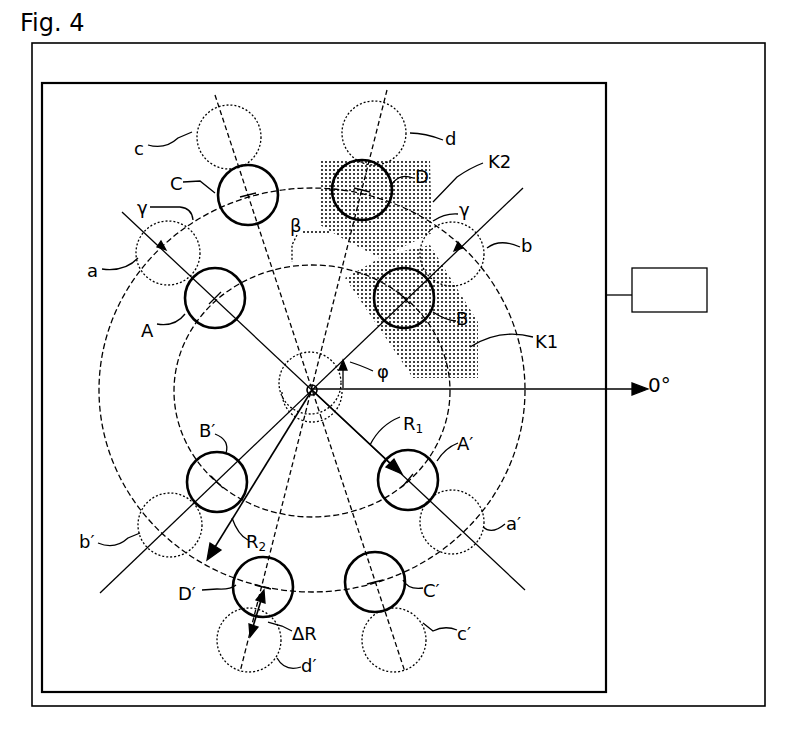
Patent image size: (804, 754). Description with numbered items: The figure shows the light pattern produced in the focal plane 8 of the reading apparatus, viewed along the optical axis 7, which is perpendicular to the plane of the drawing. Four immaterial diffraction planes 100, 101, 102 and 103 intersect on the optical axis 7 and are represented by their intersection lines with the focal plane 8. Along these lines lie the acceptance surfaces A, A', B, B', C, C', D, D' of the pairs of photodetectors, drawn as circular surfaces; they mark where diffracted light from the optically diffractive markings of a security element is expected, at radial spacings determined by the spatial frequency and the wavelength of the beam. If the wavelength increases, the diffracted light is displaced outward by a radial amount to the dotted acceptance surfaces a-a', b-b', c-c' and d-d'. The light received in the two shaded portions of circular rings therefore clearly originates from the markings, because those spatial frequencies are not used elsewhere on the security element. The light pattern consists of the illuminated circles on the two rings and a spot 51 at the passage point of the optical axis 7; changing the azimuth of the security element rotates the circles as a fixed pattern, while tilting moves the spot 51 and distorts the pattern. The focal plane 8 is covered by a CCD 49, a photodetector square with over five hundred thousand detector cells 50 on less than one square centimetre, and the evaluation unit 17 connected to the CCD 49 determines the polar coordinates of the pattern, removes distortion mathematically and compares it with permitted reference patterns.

The detector cells 50 is at (50, 82).
The focal plane 8 is at (740, 77).
The CCD 49 is at (606, 128).
The evaluation unit 17 is at (670, 297).
The diffraction plane 100 is at (122, 215).
The diffraction plane 101 is at (517, 202).
The diffraction plane 102 is at (222, 94).
The diffraction plane 103 is at (392, 95).
The spot 51 is at (310, 360).
The optical axis 7 is at (290, 393).